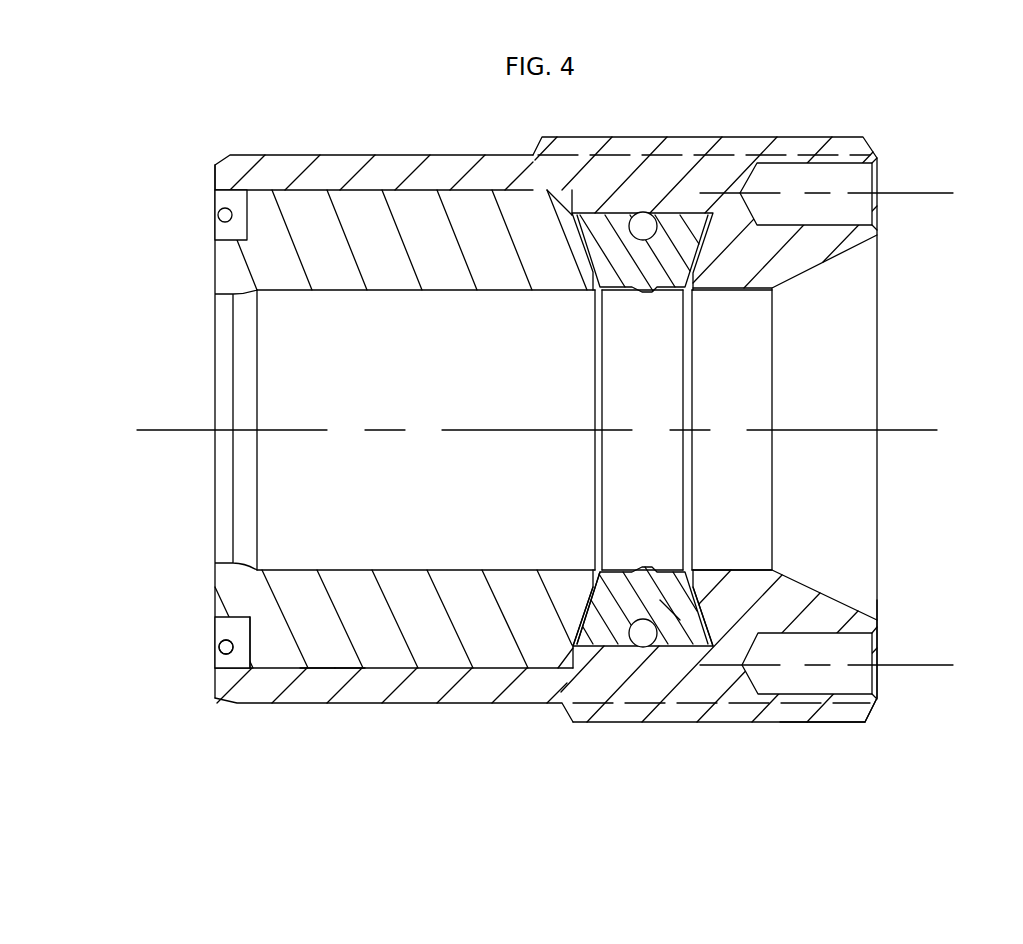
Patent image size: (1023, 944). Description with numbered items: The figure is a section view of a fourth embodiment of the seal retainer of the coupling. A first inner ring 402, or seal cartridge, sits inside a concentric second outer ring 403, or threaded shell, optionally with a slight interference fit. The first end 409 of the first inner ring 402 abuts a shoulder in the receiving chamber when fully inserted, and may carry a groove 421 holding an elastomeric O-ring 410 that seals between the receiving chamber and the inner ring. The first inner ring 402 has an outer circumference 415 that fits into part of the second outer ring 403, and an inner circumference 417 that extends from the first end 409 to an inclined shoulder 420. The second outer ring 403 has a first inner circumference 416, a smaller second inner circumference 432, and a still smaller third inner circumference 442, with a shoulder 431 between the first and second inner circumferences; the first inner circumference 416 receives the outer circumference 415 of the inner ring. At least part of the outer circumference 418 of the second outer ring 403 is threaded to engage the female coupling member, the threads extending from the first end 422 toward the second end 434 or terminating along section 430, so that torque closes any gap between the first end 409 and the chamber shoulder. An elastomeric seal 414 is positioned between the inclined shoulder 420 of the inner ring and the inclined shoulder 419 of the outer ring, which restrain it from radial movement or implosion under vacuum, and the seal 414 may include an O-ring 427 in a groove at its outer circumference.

The first inner ring 402 is at (413, 637).
The second outer ring 403 is at (762, 489).
The first end 409 is at (215, 600).
The elastomeric O-ring 410 is at (219, 655).
The elastomeric seal 414 is at (697, 633).
The outer circumference 415 is at (318, 668).
The first inner circumference 416 is at (335, 668).
The inner circumference 417 is at (427, 573).
The outer circumference 418 is at (828, 722).
The inclined shoulder 419 is at (695, 650).
The inclined shoulder 420 is at (595, 650).
The groove 421 is at (247, 655).
The first end 422 is at (880, 628).
The O-ring 427 is at (640, 635).
The section 430 is at (525, 697).
The shoulder 431 is at (595, 646).
The second inner circumference 432 is at (677, 628).
The second end 434 is at (214, 672).
The third inner circumference 442 is at (733, 567).